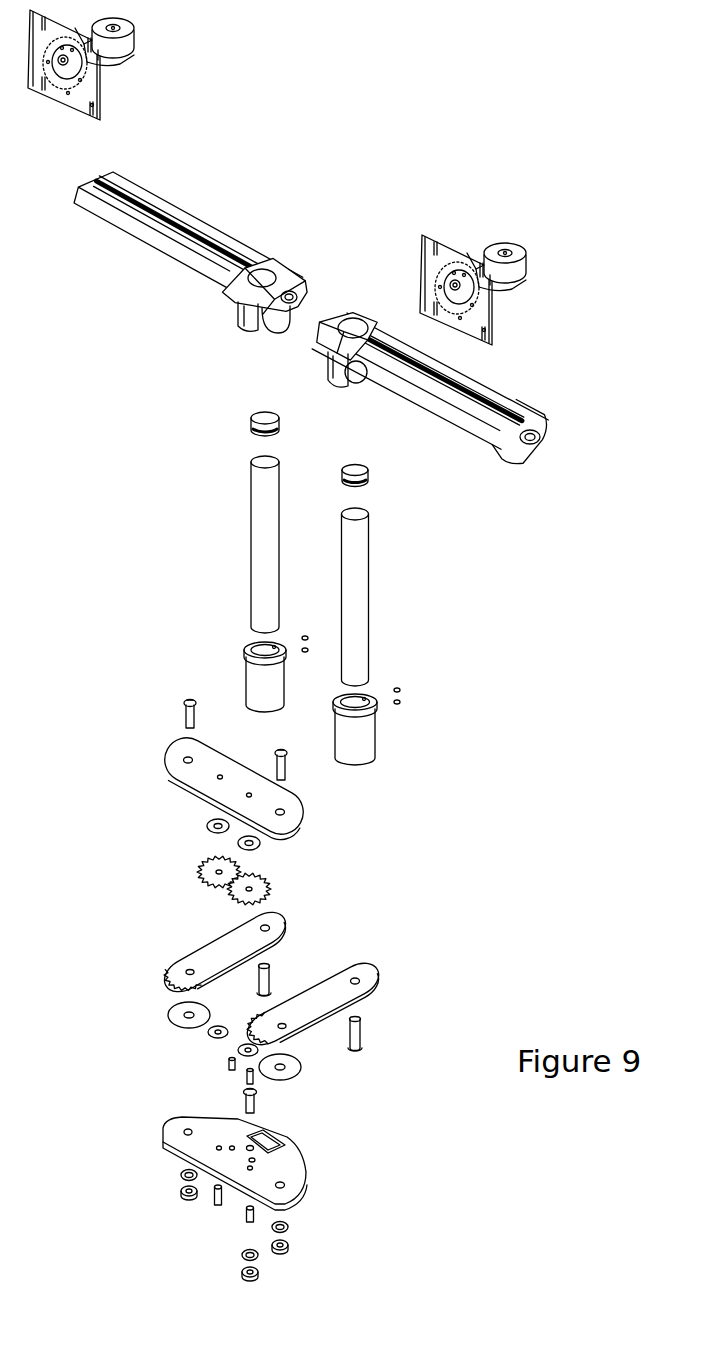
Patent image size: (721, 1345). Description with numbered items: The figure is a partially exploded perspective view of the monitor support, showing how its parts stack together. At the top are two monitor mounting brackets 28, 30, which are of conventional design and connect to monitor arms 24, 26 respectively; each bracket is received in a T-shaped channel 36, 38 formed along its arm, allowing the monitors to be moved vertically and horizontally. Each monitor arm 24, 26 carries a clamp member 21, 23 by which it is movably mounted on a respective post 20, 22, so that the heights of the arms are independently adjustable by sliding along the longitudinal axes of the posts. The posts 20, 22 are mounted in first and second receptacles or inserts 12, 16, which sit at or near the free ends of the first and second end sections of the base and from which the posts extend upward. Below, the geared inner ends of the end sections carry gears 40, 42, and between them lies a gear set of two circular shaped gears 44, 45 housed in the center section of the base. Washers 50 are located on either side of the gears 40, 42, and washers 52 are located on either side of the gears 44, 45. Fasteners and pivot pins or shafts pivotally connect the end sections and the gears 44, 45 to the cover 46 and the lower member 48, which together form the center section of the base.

The first receptacle or insert 12 is at (370, 742).
The second receptacle or insert 16 is at (256, 678).
The post 20 is at (362, 575).
The clamp member 21 is at (355, 318).
The post 22 is at (258, 533).
The clamp member 23 is at (289, 270).
The monitor arm 24 is at (473, 378).
The monitor arm 26 is at (207, 233).
The mounting bracket 28 is at (517, 274).
The mounting bracket 30 is at (125, 50).
The T-shaped channel 36 is at (507, 403).
The T-shaped channel 38 is at (158, 208).
The gear 40 is at (255, 1032).
The gear 42 is at (175, 984).
The circular shaped gear 44 is at (272, 890).
The circular shaped gear 45 is at (196, 875).
The cover 46 is at (186, 773).
The lower member 48 is at (292, 1178).
The washer 50 is at (172, 1016).
The washer 52 is at (212, 822).